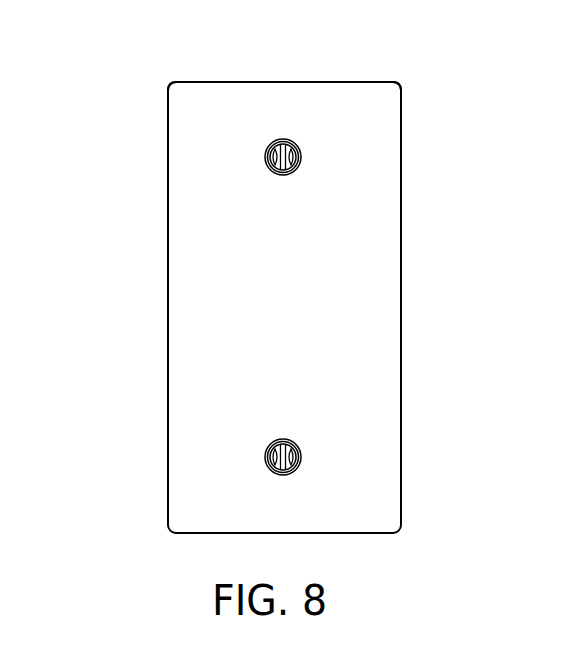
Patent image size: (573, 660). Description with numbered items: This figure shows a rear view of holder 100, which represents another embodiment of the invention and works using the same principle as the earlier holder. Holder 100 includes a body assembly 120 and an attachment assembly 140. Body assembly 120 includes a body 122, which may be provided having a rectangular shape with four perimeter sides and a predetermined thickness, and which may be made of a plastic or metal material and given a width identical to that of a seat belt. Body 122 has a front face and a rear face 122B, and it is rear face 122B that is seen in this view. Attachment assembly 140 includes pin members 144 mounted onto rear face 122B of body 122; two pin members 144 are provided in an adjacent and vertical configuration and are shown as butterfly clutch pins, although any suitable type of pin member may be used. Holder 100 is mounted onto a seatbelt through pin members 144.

The holder 100 is at (164, 65).
The body assembly 120 is at (163, 154).
The body 122 is at (167, 205).
The rear face 122B is at (373, 238).
The attachment assembly 140 is at (245, 339).
The pin members 144 is at (301, 155).